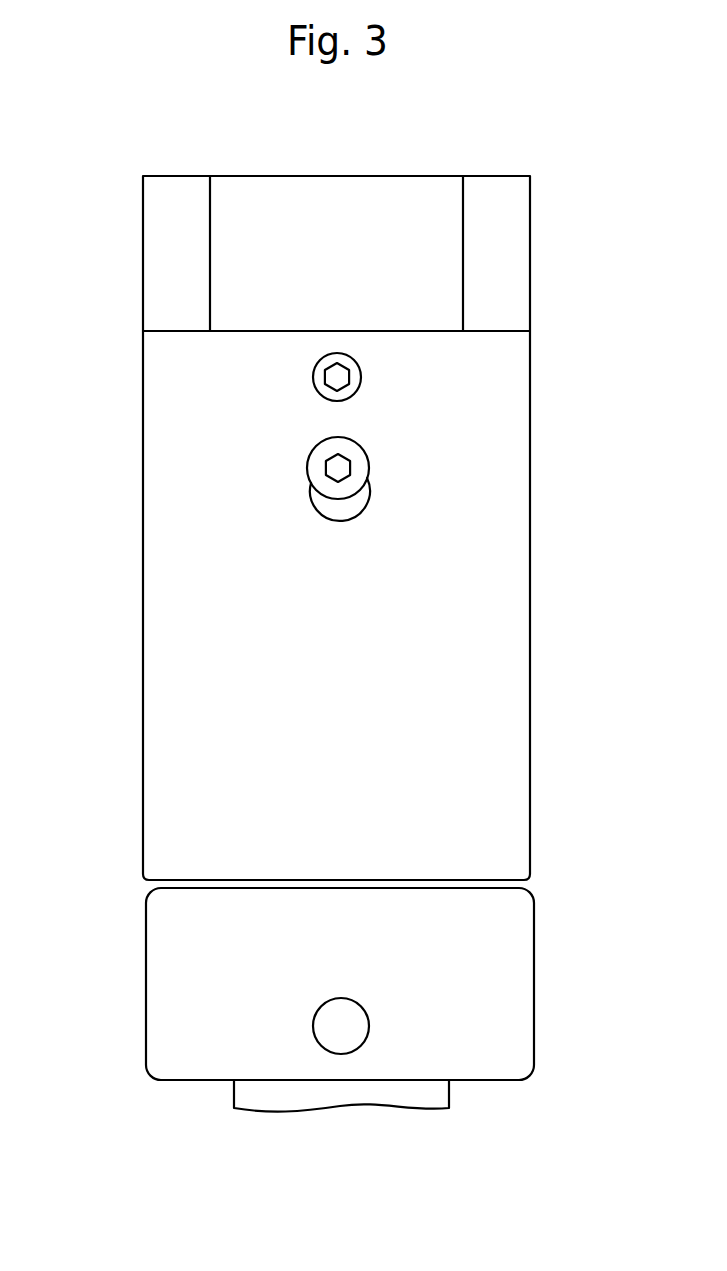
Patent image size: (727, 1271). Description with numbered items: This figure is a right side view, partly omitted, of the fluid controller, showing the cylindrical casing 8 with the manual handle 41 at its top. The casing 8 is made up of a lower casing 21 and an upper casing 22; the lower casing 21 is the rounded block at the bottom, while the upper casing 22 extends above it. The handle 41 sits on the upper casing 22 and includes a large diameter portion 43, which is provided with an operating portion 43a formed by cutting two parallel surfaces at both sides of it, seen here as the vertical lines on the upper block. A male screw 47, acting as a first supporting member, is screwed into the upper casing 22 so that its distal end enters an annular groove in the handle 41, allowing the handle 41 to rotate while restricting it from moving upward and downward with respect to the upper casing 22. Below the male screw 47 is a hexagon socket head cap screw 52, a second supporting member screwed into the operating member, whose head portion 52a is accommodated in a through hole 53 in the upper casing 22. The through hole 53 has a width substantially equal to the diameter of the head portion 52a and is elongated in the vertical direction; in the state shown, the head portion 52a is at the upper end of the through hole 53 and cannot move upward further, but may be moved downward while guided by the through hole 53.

The casing 8 is at (531, 738).
The lower casing 21 is at (534, 990).
The upper casing 22 is at (531, 570).
The manual handle 41 is at (348, 233).
The large diameter portion 43 is at (162, 227).
The operating portion 43a is at (463, 205).
The male screw 47 is at (361, 375).
The hexagon socket head cap screw 52 is at (467, 456).
The head portion 52a is at (348, 448).
The through hole 53 is at (345, 508).